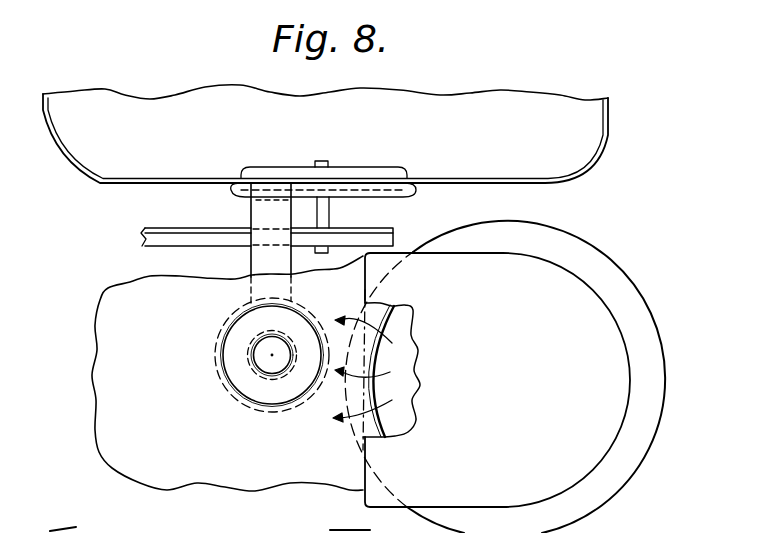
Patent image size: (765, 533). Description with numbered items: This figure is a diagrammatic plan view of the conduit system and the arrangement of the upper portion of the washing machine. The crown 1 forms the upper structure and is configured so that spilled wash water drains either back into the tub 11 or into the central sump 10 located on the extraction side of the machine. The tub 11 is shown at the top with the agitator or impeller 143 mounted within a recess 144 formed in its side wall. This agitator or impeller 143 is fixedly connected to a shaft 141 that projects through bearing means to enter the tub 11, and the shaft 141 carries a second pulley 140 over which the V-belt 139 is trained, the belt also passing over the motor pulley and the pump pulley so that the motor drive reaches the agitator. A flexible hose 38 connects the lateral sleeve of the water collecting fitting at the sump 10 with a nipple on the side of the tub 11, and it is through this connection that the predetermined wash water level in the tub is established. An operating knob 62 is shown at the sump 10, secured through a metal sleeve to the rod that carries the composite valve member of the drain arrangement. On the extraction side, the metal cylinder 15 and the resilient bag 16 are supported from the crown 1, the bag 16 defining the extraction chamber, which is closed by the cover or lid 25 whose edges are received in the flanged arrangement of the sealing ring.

The crown 1 is at (117, 387).
The central sump 10 is at (228, 358).
The tub 11 is at (587, 134).
The metal cylinder 15 is at (662, 410).
The resilient bag 16 is at (407, 386).
The cover or lid 25 is at (606, 350).
The flexible hose 38 is at (262, 262).
The operating knob 62 is at (262, 364).
The V-belt 139 is at (153, 234).
The second pulley 140 is at (271, 222).
The shaft 141 is at (322, 206).
The agitator or impeller 143 is at (378, 166).
The recess 144 is at (417, 187).